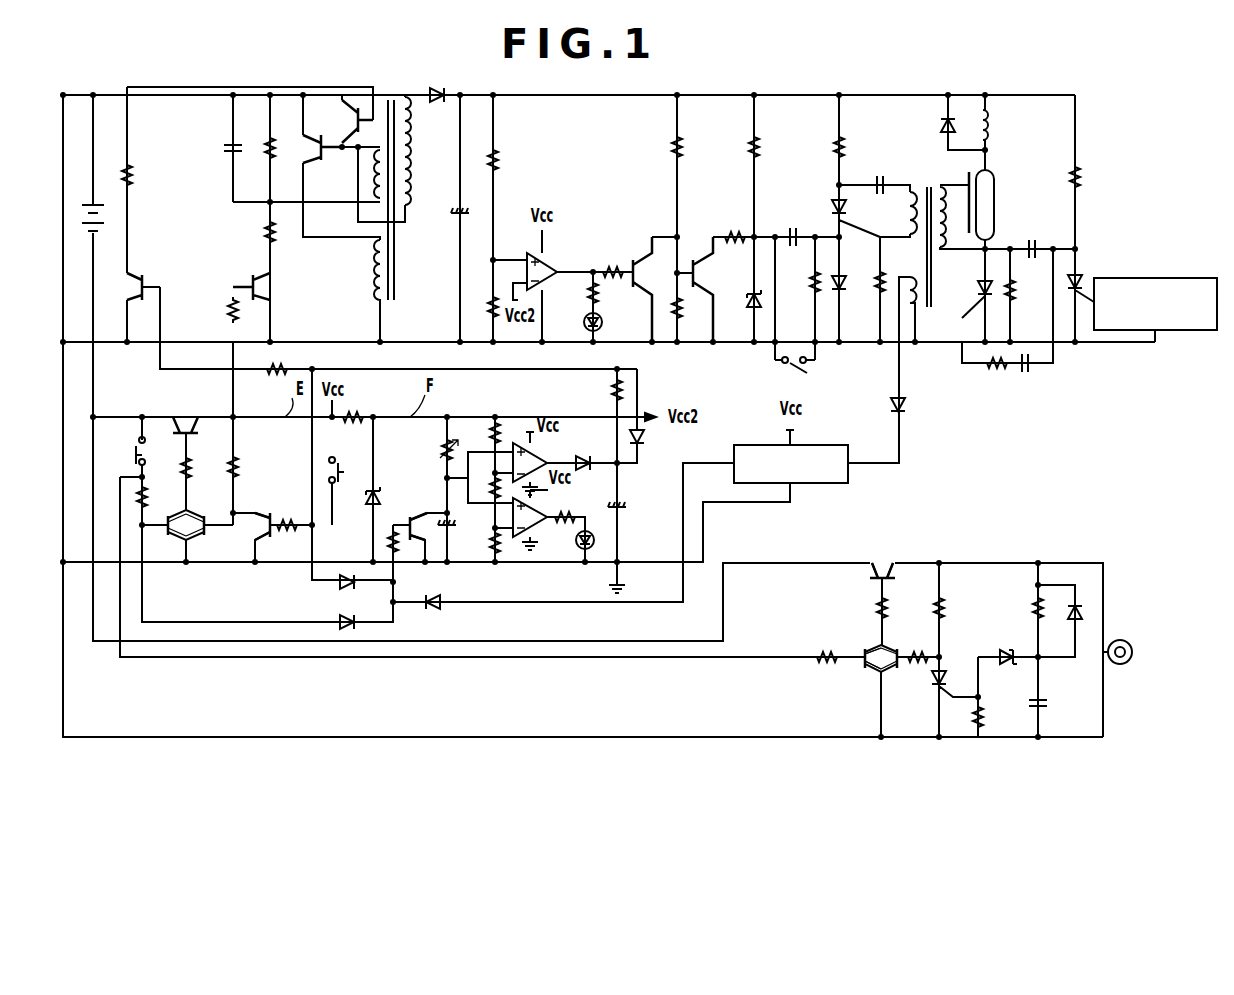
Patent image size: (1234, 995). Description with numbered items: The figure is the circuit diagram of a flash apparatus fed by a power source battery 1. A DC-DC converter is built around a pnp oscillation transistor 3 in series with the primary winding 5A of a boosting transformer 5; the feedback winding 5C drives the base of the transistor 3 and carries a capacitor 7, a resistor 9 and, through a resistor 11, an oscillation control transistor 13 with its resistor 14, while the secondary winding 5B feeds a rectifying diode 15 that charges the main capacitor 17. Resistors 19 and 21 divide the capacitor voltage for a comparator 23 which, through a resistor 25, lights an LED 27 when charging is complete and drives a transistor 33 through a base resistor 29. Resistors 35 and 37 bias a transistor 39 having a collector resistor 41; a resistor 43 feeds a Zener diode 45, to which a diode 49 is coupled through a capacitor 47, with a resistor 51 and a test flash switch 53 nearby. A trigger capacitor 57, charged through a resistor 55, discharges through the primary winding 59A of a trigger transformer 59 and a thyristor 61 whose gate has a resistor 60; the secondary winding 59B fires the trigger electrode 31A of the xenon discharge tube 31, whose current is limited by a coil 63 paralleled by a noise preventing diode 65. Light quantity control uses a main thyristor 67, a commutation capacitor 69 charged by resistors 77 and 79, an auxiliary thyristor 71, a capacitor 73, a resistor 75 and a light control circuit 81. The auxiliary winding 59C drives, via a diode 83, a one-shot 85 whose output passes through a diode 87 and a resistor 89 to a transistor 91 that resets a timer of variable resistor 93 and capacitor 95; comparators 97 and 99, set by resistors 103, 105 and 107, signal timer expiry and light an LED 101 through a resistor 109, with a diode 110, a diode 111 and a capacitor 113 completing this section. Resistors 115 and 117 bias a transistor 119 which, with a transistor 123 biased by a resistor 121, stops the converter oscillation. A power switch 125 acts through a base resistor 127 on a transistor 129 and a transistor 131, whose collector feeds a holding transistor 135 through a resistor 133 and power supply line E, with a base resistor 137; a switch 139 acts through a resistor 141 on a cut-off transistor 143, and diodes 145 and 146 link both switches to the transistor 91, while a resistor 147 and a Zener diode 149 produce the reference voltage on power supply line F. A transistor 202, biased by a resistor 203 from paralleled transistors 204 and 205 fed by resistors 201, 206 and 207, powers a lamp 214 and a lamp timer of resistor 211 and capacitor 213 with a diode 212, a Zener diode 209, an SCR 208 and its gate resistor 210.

The power source battery 1 is at (90, 216).
The oscillation transistor 3 is at (318, 150).
The boosting transformer 5 is at (405, 92).
The primary winding 5A is at (374, 268).
The secondary winding 5B is at (412, 187).
The feedback winding 5C is at (372, 172).
The capacitor 7 is at (228, 150).
The resistor 9 is at (266, 152).
The resistor 11 is at (267, 234).
The oscillation control transistor 13 is at (258, 287).
The resistor 14 is at (231, 313).
The rectifying diode 15 is at (440, 102).
The main capacitor 17 is at (470, 208).
The resistor 19 is at (496, 160).
The resistor 21 is at (490, 302).
The comparator 23 is at (550, 262).
The resistor 25 is at (590, 296).
The light emitting diode 27 is at (604, 322).
The base resistor 29 is at (612, 266).
The xenon discharge tube 31 is at (994, 178).
The trigger electrode 31A is at (953, 193).
The transistor 33 is at (640, 270).
The resistor 35 is at (672, 149).
The resistor 37 is at (680, 310).
The transistor 39 is at (697, 273).
The collector resistor 41 is at (733, 232).
The resistor 43 is at (751, 149).
The Zener diode 45 is at (747, 305).
The capacitor 47 is at (792, 230).
The diode 49 is at (843, 290).
The resistor 51 is at (810, 290).
The switch 53 is at (792, 366).
The resistor 55 is at (836, 144).
The trigger capacitor 57 is at (880, 176).
The trigger transformer 59 is at (924, 184).
The primary winding 59A is at (908, 214).
The secondary winding 59B is at (948, 243).
The auxiliary winding 59C is at (914, 303).
The resistor 60 is at (885, 278).
The thyristor 61 is at (834, 206).
The coil 63 is at (992, 125).
The diode 65 is at (941, 127).
The main thyristor 67 is at (988, 294).
The commutation capacitor 69 is at (1032, 240).
The auxiliary thyristor 71 is at (1080, 280).
The capacitor 73 is at (1026, 369).
The resistor 75 is at (998, 368).
The charging resistor 77 is at (1080, 179).
The charging resistor 79 is at (1014, 295).
The light control circuit 81 is at (1172, 275).
The diode 83 is at (903, 404).
The monostable multivibrator 85 is at (820, 445).
The diode 87 is at (437, 609).
The resistor 89 is at (389, 540).
The transistor 91 is at (412, 526).
The variable resistor 93 is at (446, 446).
The capacitor 95 is at (453, 526).
The comparator 97 is at (548, 448).
The comparator 99 is at (543, 530).
The LED 101 is at (596, 534).
The resistor 103 is at (490, 432).
The resistor 105 is at (490, 490).
The resistor 107 is at (490, 545).
The resistor 109 is at (568, 512).
The diode 110 is at (642, 440).
The diode 111 is at (590, 455).
The capacitor 113 is at (630, 508).
The resistor 115 is at (613, 392).
The resistor 117 is at (276, 374).
The transistor 119 is at (138, 287).
The resistor 121 is at (132, 178).
The oscillation controlling transistor 123 is at (352, 124).
The power switch 125 is at (136, 450).
The base resistor 127 is at (145, 498).
The power supply control transistor 129 is at (176, 533).
The transistor 131 is at (188, 430).
The base resistor 133 is at (238, 467).
The power supply holding transistor 135 is at (198, 565).
The base resistor 137 is at (190, 472).
The switch 139 is at (339, 468).
The base resistor 141 is at (287, 516).
The power supply cut-off transistor 143 is at (265, 523).
The diode 145 is at (350, 586).
The diode 146 is at (340, 620).
The resistor 147 is at (356, 412).
The Zener diode 149 is at (368, 505).
The resistor 201 is at (826, 663).
The transistor 202 is at (882, 572).
The resistor 203 is at (878, 610).
The transistor 204 is at (870, 662).
The transistor 205 is at (890, 672).
The resistor 206 is at (916, 651).
The resistor 207 is at (945, 612).
The SCR 208 is at (945, 674).
The Zener diode 209 is at (1000, 655).
The gate resistor 210 is at (982, 717).
The resistor 211 is at (1042, 612).
The diode 212 is at (1078, 622).
The capacitor 213 is at (1050, 705).
The lamp 214 is at (1122, 640).